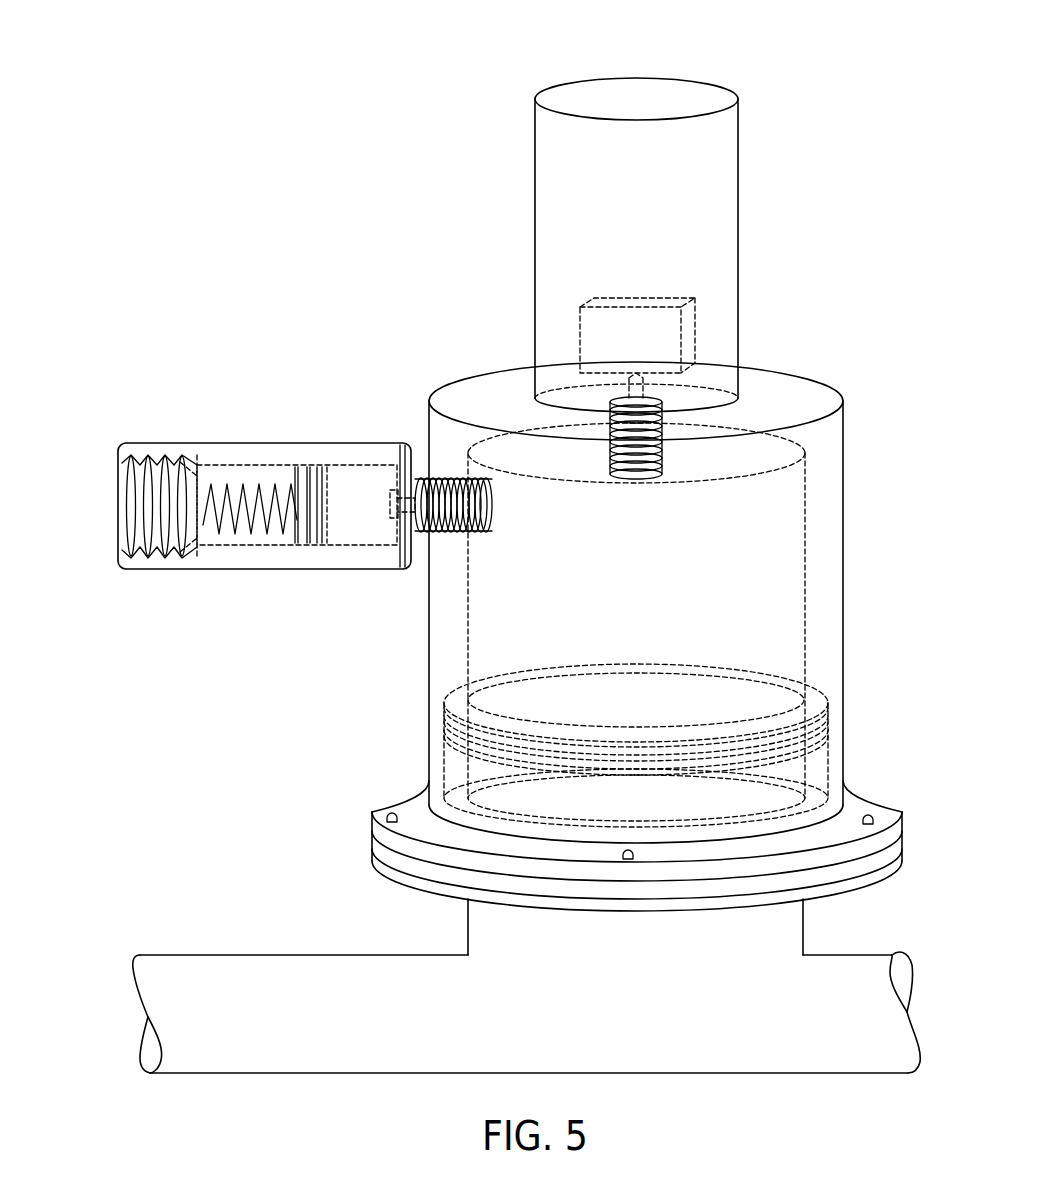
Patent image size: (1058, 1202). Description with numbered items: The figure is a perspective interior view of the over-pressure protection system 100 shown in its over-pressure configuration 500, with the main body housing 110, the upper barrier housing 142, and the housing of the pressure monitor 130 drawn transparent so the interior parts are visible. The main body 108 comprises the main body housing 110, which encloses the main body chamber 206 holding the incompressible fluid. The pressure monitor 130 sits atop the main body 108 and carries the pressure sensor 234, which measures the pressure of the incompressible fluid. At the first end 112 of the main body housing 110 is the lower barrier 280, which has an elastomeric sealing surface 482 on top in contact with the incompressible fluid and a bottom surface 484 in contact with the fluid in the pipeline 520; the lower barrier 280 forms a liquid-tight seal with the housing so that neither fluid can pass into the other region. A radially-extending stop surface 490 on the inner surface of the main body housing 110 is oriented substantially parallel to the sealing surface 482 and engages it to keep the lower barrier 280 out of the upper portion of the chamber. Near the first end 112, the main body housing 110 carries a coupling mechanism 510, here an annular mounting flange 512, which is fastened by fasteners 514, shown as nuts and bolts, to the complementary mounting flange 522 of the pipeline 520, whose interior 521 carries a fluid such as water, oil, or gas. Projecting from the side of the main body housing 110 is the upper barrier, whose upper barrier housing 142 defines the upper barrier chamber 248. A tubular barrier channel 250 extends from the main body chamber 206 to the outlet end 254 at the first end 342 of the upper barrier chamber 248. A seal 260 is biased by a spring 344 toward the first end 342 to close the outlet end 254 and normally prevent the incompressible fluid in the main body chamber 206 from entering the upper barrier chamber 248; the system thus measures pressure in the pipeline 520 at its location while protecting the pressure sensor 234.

The over-pressure protection system 100 is at (298, 77).
The over-pressure configuration 500 is at (218, 180).
The pressure monitor 130 is at (718, 155).
The pressure sensor 234 is at (635, 322).
The main body 108 is at (843, 443).
The main body housing 110 is at (833, 490).
The main body chamber 206 is at (800, 571).
The lower barrier 280 is at (450, 706).
The stop surface 490 is at (815, 703).
The sealing surface 482 is at (692, 692).
The bottom surface 484 is at (622, 770).
The first end 112 is at (817, 820).
The coupling mechanism 510 is at (810, 850).
The annular mounting flange 512 is at (425, 837).
The fasteners 514 is at (388, 815).
The complementary mounting flange 522 is at (556, 900).
The pipeline 520 is at (188, 978).
The interior 521 is at (138, 1048).
The upper barrier housing 142 is at (222, 448).
The spring 344 is at (248, 530).
The upper barrier chamber 248 is at (262, 460).
The seal 260 is at (308, 470).
The first end 342 is at (380, 485).
The outlet end 254 is at (394, 505).
The tubular barrier channel 250 is at (403, 445).